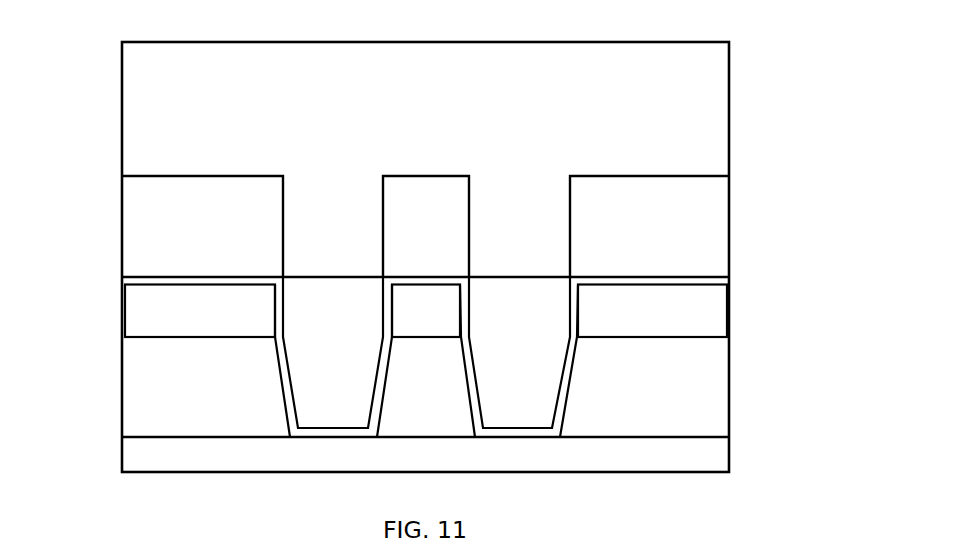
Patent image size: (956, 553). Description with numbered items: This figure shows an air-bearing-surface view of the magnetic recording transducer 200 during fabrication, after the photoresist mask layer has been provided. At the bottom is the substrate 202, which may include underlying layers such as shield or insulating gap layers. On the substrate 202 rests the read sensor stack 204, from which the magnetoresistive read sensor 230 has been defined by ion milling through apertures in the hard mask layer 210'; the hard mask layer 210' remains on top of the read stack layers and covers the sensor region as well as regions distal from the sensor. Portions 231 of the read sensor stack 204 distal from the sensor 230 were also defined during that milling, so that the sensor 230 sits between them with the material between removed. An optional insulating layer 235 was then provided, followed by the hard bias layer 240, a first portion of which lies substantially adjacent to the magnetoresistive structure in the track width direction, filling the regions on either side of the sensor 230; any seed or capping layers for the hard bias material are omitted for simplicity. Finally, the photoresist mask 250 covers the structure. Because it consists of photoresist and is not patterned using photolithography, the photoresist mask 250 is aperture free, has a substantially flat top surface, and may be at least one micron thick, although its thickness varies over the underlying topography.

The transducer 200 is at (403, 18).
The substrate 202 is at (729, 446).
The read sensor stack 204 is at (80, 401).
The hard mask layer 210' is at (388, 295).
The magnetoresistive read sensor 230 is at (467, 350).
The portions of the read sensor stack 231 is at (122, 397).
The insulating layer 235 is at (138, 278).
The hard bias layer 240 is at (283, 243).
The photoresist mask 250 is at (729, 102).